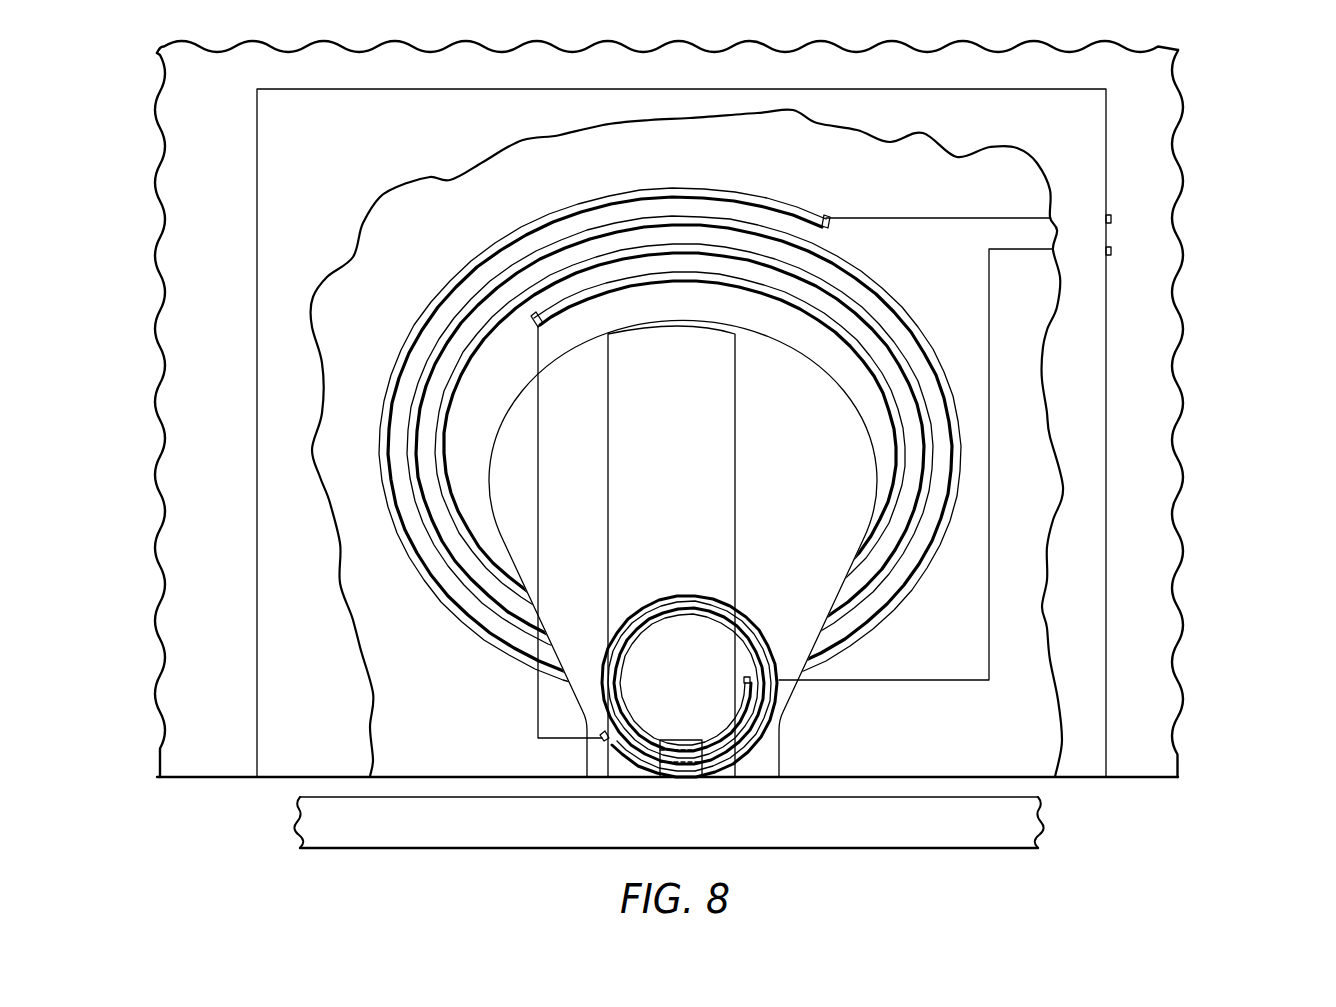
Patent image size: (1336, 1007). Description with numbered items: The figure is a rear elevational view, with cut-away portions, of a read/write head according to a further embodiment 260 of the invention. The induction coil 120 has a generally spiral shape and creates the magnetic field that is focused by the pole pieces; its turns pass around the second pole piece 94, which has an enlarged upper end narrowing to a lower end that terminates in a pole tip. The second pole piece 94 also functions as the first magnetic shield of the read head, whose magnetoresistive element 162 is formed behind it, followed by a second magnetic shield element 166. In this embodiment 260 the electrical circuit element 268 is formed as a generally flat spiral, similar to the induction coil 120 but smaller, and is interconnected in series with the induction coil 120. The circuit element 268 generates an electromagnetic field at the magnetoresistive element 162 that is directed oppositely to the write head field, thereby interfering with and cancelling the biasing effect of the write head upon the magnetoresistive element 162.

The embodiment 260 is at (1213, 421).
The second pole piece 94 is at (808, 556).
The second magnetic shield element 166 is at (737, 480).
The induction coil 120 is at (456, 289).
The electrical circuit element 268 is at (773, 712).
The magnetoresistive element 162 is at (684, 740).